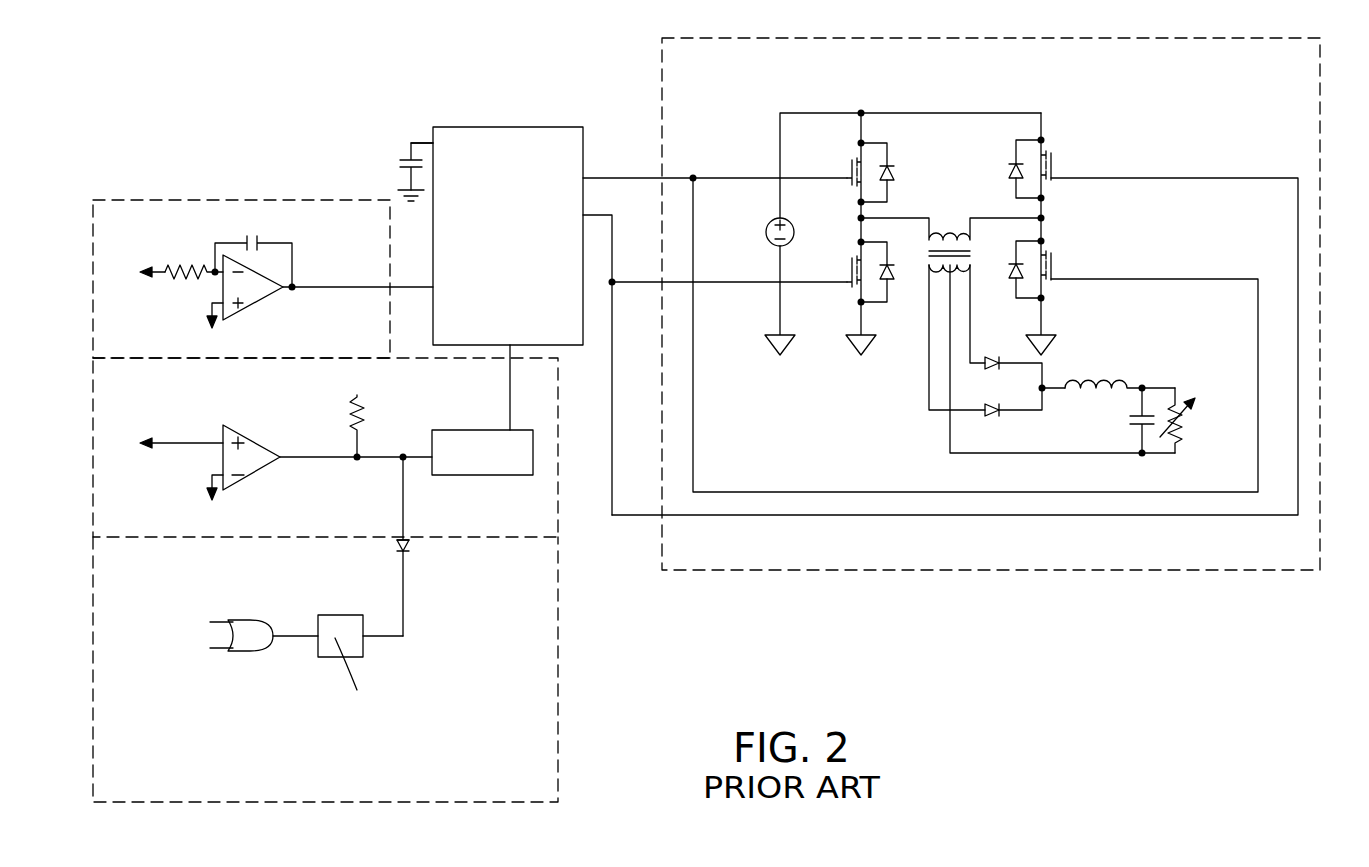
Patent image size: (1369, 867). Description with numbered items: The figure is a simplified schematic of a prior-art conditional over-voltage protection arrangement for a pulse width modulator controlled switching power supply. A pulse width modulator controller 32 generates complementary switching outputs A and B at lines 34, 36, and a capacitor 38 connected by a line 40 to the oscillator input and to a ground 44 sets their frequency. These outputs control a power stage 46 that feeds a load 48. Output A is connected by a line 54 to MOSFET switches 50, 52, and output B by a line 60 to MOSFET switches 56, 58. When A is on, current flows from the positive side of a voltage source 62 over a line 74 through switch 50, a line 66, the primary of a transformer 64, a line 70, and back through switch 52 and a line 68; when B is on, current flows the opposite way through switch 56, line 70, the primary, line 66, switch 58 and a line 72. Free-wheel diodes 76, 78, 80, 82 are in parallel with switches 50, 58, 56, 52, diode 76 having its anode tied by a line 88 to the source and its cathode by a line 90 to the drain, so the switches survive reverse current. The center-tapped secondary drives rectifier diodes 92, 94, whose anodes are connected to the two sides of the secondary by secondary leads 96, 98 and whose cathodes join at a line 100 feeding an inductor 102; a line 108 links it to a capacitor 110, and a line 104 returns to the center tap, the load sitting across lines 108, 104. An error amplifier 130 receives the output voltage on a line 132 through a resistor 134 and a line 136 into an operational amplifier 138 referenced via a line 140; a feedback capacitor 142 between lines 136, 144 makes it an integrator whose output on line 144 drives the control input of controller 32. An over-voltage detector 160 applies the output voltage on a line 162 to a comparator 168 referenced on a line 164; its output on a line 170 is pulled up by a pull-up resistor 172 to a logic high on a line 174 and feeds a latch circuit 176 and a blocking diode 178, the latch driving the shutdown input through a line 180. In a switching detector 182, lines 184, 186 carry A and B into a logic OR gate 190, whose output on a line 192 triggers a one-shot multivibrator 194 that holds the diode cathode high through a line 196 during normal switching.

The pulse width modulator controller 32 is at (490, 127).
The line 34 is at (715, 165).
The line 36 is at (608, 349).
The capacitor 38 is at (405, 160).
The line 40 is at (427, 143).
The ground 44 is at (413, 203).
The power stage 46 is at (1320, 70).
The load 48 is at (1188, 402).
The MOSFET switch 50 is at (852, 165).
The MOSFET switch 52 is at (1046, 288).
The line 54 is at (812, 180).
The MOSFET switch 56 is at (1057, 165).
The MOSFET switch 58 is at (852, 278).
The line 60 is at (748, 284).
The voltage source 62 is at (766, 232).
The transformer 64 is at (945, 240).
The line 66 is at (904, 224).
The line 68 is at (1050, 340).
The line 70 is at (993, 222).
The line 72 is at (858, 340).
The line 74 is at (790, 113).
The free-wheel diode 76 is at (892, 172).
The free-wheel diode 78 is at (889, 282).
The free-wheel diode 80 is at (1012, 165).
The free-wheel diode 82 is at (1012, 272).
The line 88 is at (868, 140).
The line 90 is at (890, 200).
The diode 92 is at (992, 360).
The diode 94 is at (988, 405).
The secondary lead 96 is at (968, 350).
The secondary lead 98 is at (929, 385).
The line 100 is at (1030, 388).
The inductor 102 is at (1105, 380).
The line 104 is at (1030, 455).
The line 108 is at (1147, 385).
The capacitor 110 is at (1130, 420).
The error amplifier 130 is at (128, 200).
The line 132 is at (142, 270).
The resistor 134 is at (185, 282).
The line 136 is at (213, 270).
The operational amplifier 138 is at (248, 276).
The line 140 is at (208, 325).
The feedback capacitor 142 is at (259, 240).
The line 144 is at (294, 287).
The over-voltage detector 160 is at (558, 440).
The line 162 is at (145, 440).
The line 164 is at (212, 475).
The comparator 168 is at (232, 428).
The line 170 is at (300, 460).
The pull-up resistor 172 is at (350, 408).
The line 174 is at (353, 392).
The latch circuit 176 is at (450, 432).
The blocking diode 178 is at (410, 545).
The line 180 is at (508, 387).
The switching detector 182 is at (558, 665).
The line 184 is at (210, 620).
The line 186 is at (223, 650).
The logic OR gate 190 is at (255, 620).
The line 192 is at (288, 640).
The one-shot multivibrator 194 is at (362, 615).
The line 196 is at (400, 575).